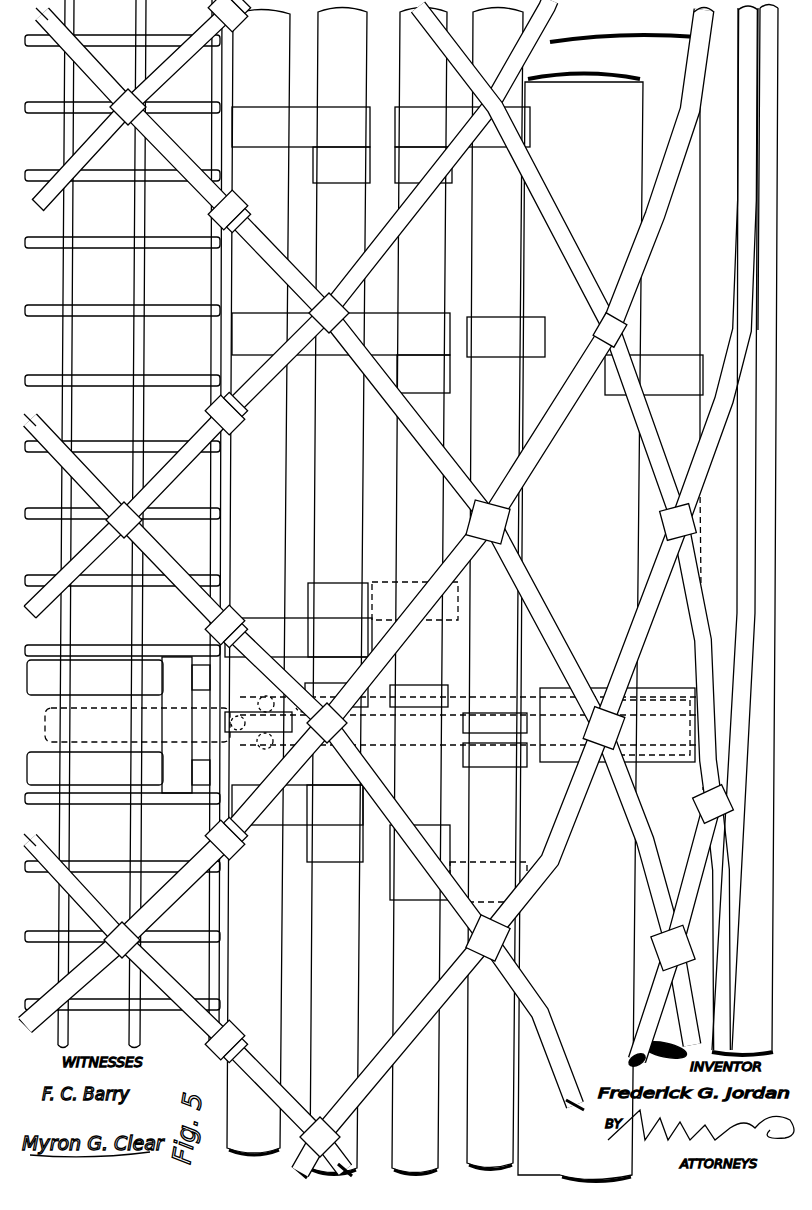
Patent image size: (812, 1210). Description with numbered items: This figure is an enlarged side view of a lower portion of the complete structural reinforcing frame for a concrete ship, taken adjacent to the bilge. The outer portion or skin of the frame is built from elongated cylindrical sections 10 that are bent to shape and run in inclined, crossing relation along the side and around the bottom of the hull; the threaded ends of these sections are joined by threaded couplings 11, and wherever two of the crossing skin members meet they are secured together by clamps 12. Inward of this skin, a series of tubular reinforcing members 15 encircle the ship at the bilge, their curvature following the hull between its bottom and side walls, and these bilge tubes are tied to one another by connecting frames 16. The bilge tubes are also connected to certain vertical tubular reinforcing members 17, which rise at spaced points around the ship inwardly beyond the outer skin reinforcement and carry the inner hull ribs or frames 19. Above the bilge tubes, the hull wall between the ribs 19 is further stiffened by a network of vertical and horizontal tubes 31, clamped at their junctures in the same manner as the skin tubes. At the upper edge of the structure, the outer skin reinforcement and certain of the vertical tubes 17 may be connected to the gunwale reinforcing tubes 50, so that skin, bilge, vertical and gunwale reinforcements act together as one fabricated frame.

The elongated cylindrical section 10 is at (417, 440).
The threaded coupling 11 is at (237, 532).
The clamp 12 is at (330, 335).
The tubular reinforcing member 15 is at (357, 23).
The connecting frame 16 is at (375, 585).
The vertical tubular reinforcing member 17 is at (72, 678).
The inner hull rib 19 is at (170, 725).
The network of vertical and horizontal tubes 31 is at (70, 332).
The gunwale reinforcing tube 50 is at (688, 168).